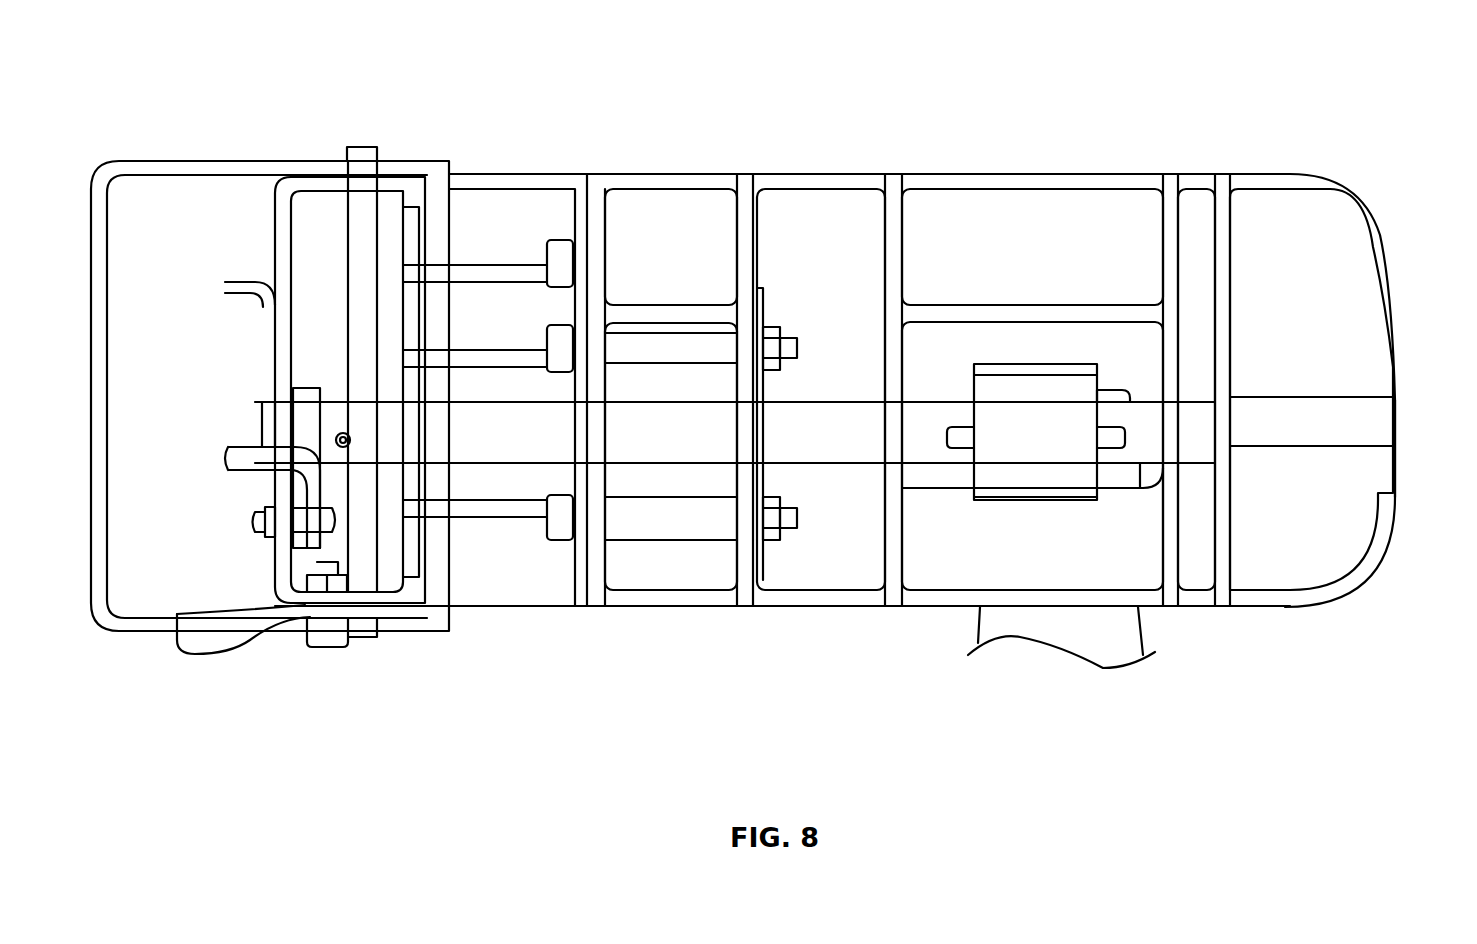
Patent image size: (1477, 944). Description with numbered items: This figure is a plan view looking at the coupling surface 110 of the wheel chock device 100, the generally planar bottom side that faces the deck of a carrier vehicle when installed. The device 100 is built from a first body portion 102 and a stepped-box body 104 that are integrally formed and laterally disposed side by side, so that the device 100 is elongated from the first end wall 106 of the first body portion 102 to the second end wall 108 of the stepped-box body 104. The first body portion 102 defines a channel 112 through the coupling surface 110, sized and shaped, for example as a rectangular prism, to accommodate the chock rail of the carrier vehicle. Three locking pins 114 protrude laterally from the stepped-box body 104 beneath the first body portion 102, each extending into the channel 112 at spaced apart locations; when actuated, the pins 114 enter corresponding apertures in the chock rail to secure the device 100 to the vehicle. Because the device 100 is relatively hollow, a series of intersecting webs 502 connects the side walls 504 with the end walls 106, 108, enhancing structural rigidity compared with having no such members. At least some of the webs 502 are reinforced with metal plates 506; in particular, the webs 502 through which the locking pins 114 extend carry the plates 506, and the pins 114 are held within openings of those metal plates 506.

The wheel chock device 100 is at (186, 86).
The first body portion 102 is at (590, 140).
The stepped-box body 104 is at (1400, 135).
The first end wall 106 is at (282, 249).
The second end wall 108 is at (1387, 378).
The coupling surface 110 is at (741, 212).
The channel 112 is at (587, 657).
The locking pins 114 is at (553, 258).
The webs 502 is at (745, 270).
The side walls 504 is at (832, 187).
The metal plates 506 is at (583, 382).